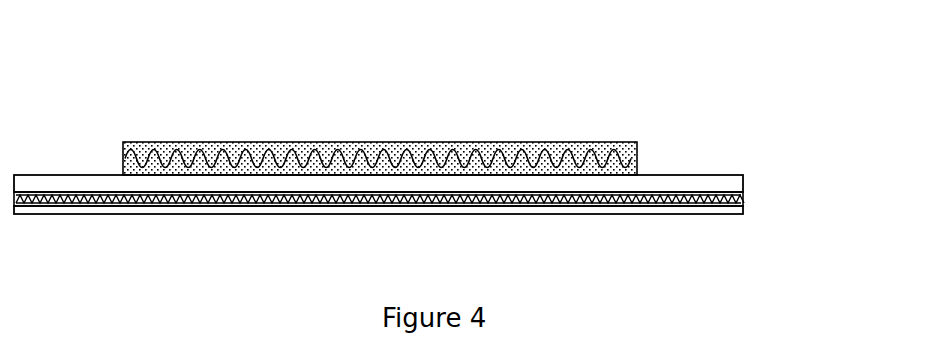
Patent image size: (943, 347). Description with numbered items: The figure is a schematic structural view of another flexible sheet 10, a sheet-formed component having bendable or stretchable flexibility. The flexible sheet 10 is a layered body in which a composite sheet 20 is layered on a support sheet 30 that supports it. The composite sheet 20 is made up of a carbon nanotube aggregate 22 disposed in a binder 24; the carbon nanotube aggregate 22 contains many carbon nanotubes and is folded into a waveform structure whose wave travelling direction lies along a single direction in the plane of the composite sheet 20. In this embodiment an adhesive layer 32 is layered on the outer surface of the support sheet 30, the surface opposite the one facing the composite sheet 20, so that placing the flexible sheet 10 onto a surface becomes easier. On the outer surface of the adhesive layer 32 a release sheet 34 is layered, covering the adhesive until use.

The flexible sheet 10 is at (424, 142).
The composite sheet 20 is at (425, 118).
The carbon nanotube aggregate 22 is at (283, 145).
The binder 24 is at (132, 145).
The support sheet 30 is at (745, 183).
The adhesive layer 32 is at (744, 195).
The release sheet 34 is at (744, 210).